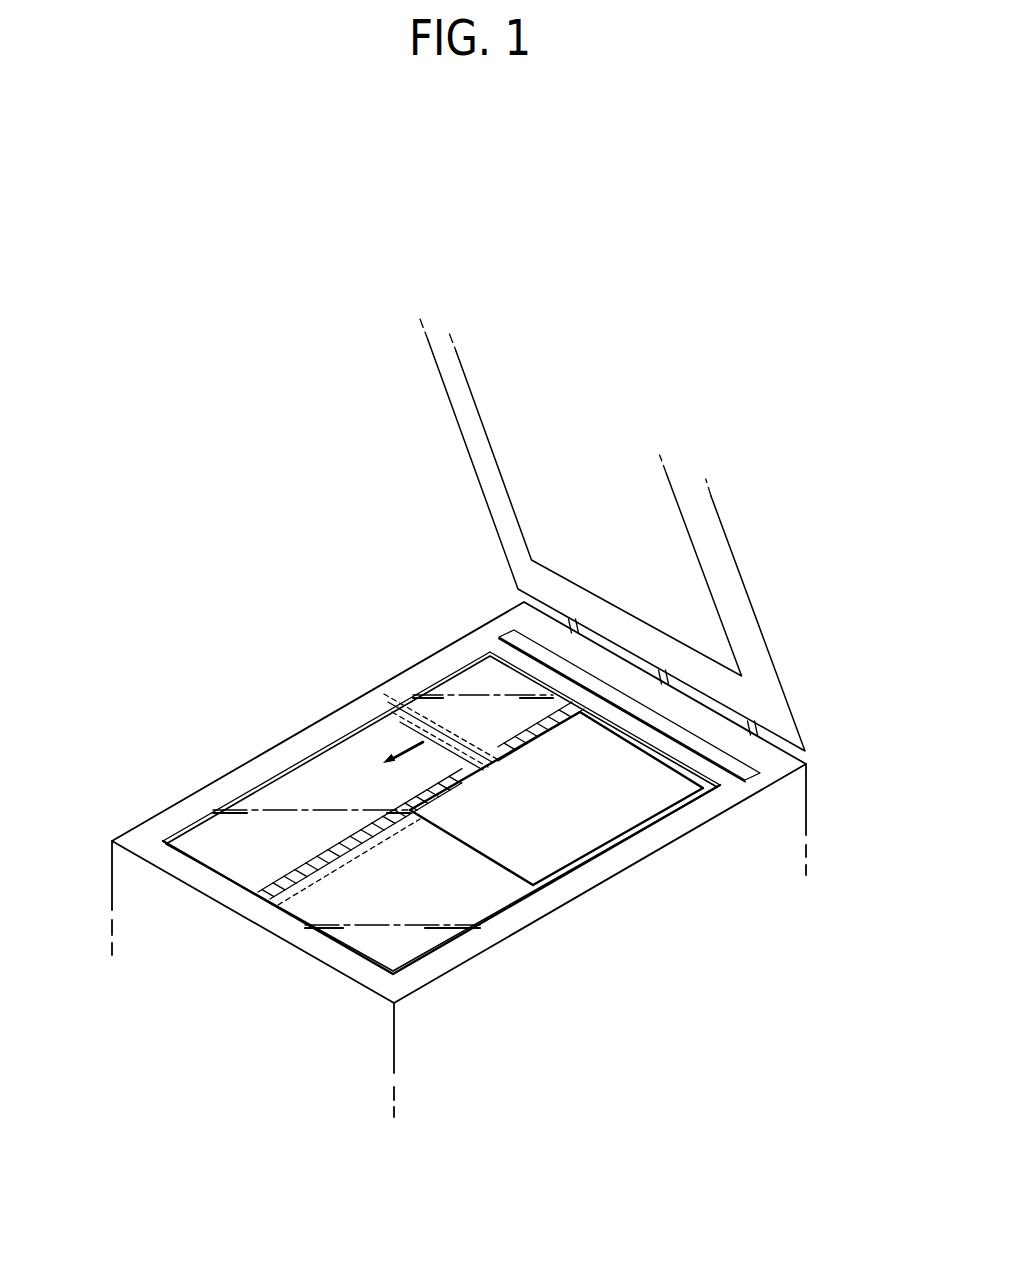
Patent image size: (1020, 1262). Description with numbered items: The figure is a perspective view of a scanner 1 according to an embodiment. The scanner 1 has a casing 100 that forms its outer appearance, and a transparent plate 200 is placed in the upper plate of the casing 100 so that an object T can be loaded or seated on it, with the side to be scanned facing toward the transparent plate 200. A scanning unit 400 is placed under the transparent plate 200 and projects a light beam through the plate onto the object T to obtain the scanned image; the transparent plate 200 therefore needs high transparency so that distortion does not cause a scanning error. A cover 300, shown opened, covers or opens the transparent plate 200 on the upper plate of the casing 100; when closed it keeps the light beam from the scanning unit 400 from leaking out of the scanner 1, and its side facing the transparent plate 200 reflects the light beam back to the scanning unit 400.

The scanner 1 is at (150, 444).
The casing 100 is at (188, 817).
The transparent plate 200 is at (316, 769).
The cover 300 is at (733, 592).
The scanning unit 400 is at (390, 706).
The object T is at (592, 817).